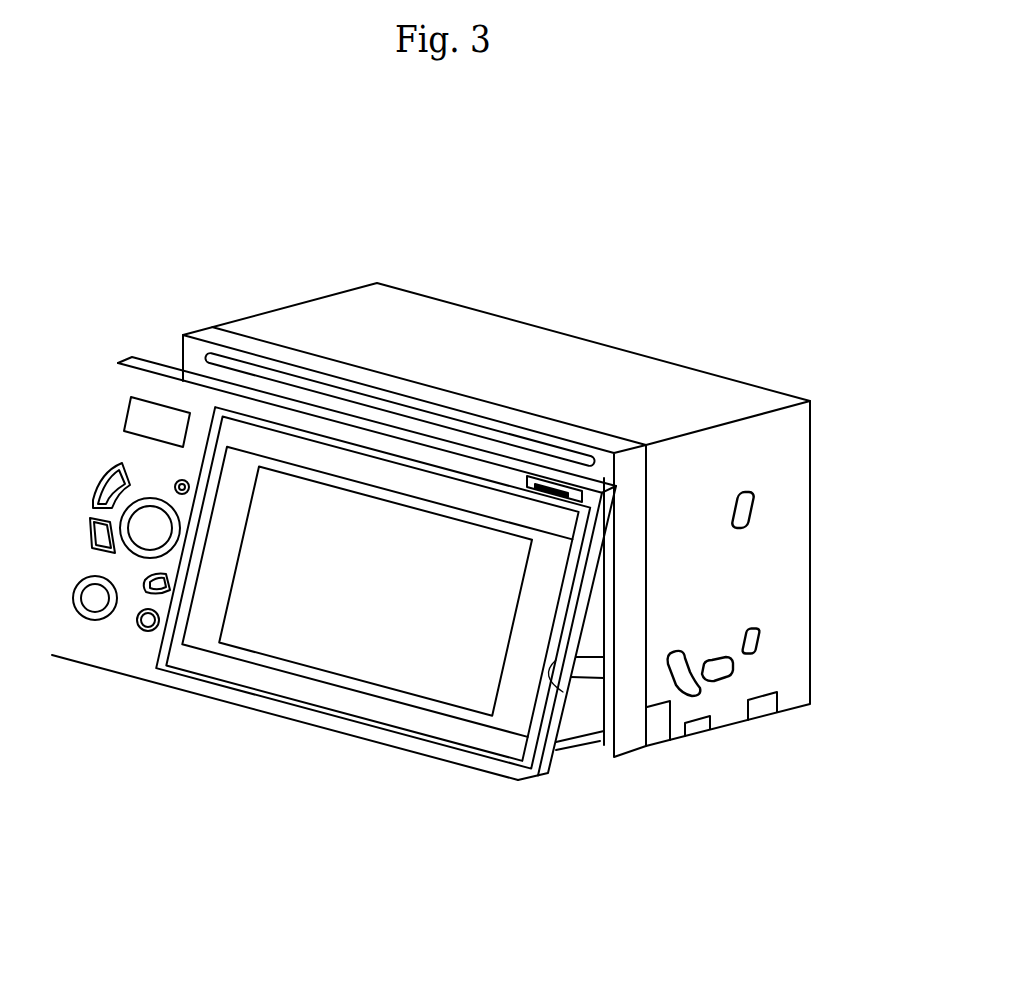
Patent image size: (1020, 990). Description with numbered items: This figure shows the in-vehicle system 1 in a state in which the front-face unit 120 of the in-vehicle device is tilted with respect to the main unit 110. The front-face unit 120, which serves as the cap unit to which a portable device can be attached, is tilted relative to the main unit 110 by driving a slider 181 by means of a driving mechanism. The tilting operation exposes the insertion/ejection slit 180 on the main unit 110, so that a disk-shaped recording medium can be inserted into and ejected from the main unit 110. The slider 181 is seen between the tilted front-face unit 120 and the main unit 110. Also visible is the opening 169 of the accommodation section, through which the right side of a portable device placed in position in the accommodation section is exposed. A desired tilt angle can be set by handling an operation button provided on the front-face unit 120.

The in-vehicle system 1 is at (577, 187).
The main unit 110 is at (692, 387).
The front-face unit 120 is at (147, 368).
The opening 169 is at (563, 692).
The insertion/ejection slit 180 is at (223, 363).
The slider 181 is at (598, 670).